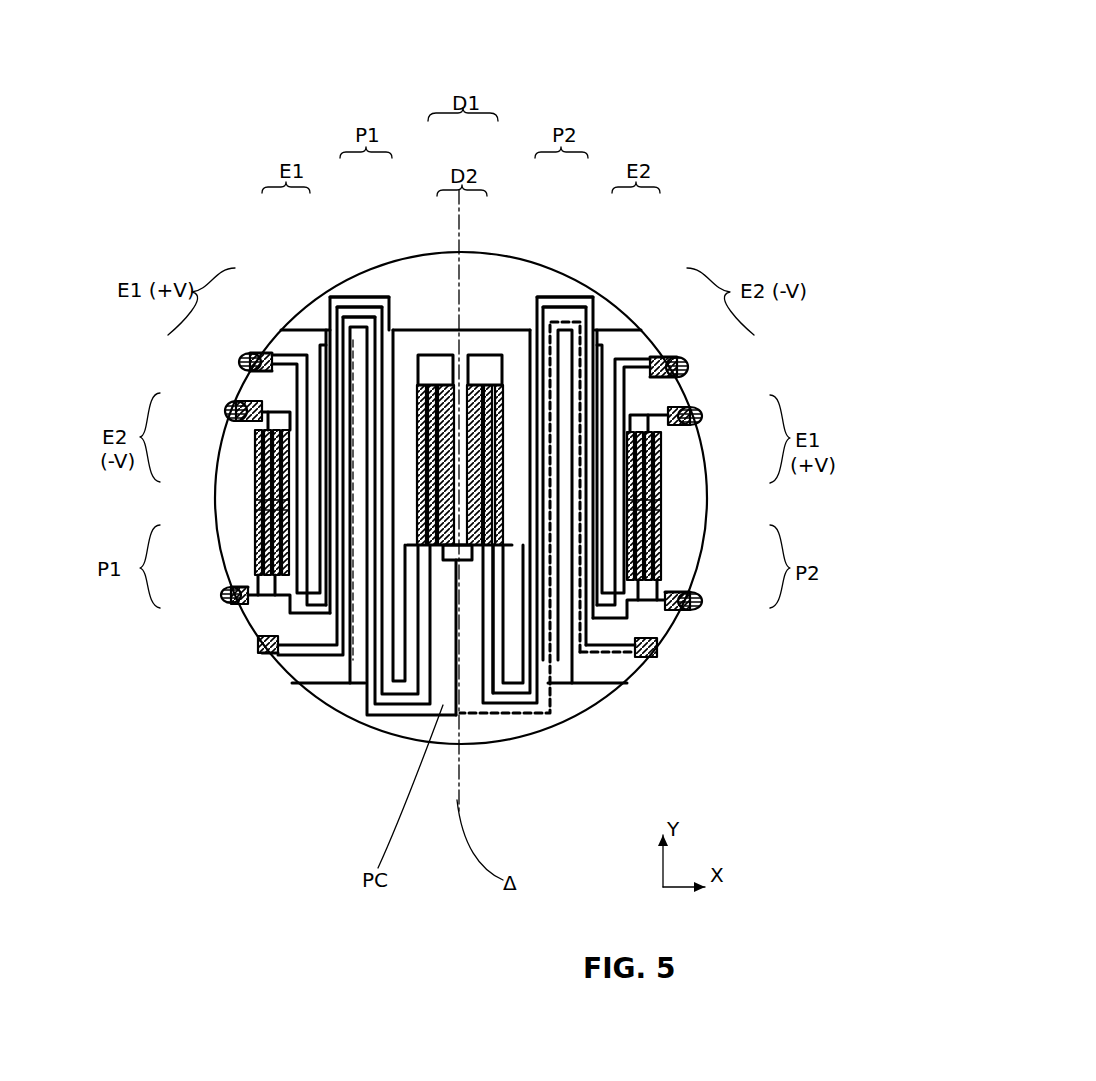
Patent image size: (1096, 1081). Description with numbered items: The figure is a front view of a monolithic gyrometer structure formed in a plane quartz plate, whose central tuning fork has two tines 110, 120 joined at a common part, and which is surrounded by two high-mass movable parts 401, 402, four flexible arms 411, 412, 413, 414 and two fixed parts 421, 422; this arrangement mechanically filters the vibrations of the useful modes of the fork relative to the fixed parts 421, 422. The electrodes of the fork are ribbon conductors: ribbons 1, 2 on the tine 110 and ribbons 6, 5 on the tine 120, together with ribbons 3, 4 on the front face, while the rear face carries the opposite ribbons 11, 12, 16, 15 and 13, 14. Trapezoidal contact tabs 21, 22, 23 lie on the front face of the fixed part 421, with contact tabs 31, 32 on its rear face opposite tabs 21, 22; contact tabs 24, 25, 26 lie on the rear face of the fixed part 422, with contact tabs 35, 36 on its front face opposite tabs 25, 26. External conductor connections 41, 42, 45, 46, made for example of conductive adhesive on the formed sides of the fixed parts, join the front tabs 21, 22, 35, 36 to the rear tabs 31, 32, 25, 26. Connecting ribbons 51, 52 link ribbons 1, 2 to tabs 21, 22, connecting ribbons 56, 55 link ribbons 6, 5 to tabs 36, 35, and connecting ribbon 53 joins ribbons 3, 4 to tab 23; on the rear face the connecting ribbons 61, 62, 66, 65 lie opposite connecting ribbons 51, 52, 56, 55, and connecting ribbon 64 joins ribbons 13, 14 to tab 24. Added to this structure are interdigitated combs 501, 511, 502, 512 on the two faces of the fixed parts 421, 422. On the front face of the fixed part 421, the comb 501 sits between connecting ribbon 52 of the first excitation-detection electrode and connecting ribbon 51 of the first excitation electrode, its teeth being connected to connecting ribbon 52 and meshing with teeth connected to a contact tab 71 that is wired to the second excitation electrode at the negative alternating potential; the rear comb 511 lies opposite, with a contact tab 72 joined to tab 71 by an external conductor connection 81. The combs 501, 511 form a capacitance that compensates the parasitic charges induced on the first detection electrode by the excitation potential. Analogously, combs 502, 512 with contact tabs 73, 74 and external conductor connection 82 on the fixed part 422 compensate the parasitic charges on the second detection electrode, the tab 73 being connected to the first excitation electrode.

The tine 110 is at (405, 425).
The tine 120 is at (509, 425).
The ribbon 1 is at (365, 270).
The ribbon 11 is at (395, 300).
The ribbon 2 is at (420, 388).
The ribbon 12 is at (430, 388).
The ribbon 3 is at (440, 388).
The ribbon 13 is at (445, 388).
The ribbon 4 is at (482, 388).
The ribbon 14 is at (478, 388).
The ribbon 5 is at (499, 388).
The ribbon 15 is at (490, 388).
The ribbon 6 is at (557, 270).
The ribbon 16 is at (527, 300).
The contact tab 21 is at (273, 352).
The contact tab 31 is at (263, 352).
The external conductor connection 41 is at (248, 361).
The contact tab 22 is at (232, 587).
The contact tab 32 is at (240, 588).
The external conductor connection 42 is at (230, 597).
The contact tab 23 is at (262, 652).
The contact tab 24 is at (648, 656).
The contact tab 35 is at (690, 592).
The contact tab 25 is at (690, 596).
The external conductor connection 45 is at (703, 601).
The contact tab 36 is at (657, 355).
The contact tab 26 is at (668, 356).
The external conductor connection 46 is at (683, 400).
The connecting ribbon 51 is at (296, 378).
The connecting ribbon 61 is at (300, 388).
The connecting ribbon 52 is at (258, 646).
The connecting ribbon 62 is at (258, 652).
The connecting ribbon 53 is at (268, 658).
The connecting ribbon 55 is at (658, 643).
The connecting ribbon 65 is at (658, 652).
The connecting ribbon 56 is at (630, 366).
The connecting ribbon 66 is at (630, 378).
The connecting ribbon 64 is at (463, 703).
The contact tab 71 is at (256, 440).
The contact tab 72 is at (256, 470).
The contact tab 73 is at (662, 446).
The contact tab 74 is at (662, 432).
The external conductor connection 81 is at (236, 411).
The external conductor connection 82 is at (690, 412).
The interdigitated comb 501 is at (240, 498).
The interdigitated comb 511 is at (240, 510).
The interdigitated comb 502 is at (680, 498).
The interdigitated comb 512 is at (680, 510).
The high-mass movable part 401 is at (296, 684).
The high-mass movable part 402 is at (357, 293).
The flexible arm 411 is at (345, 303).
The flexible arm 412 is at (398, 418).
The flexible arm 413 is at (575, 305).
The flexible arm 414 is at (641, 330).
The fixed part 421 is at (286, 618).
The fixed part 422 is at (640, 655).